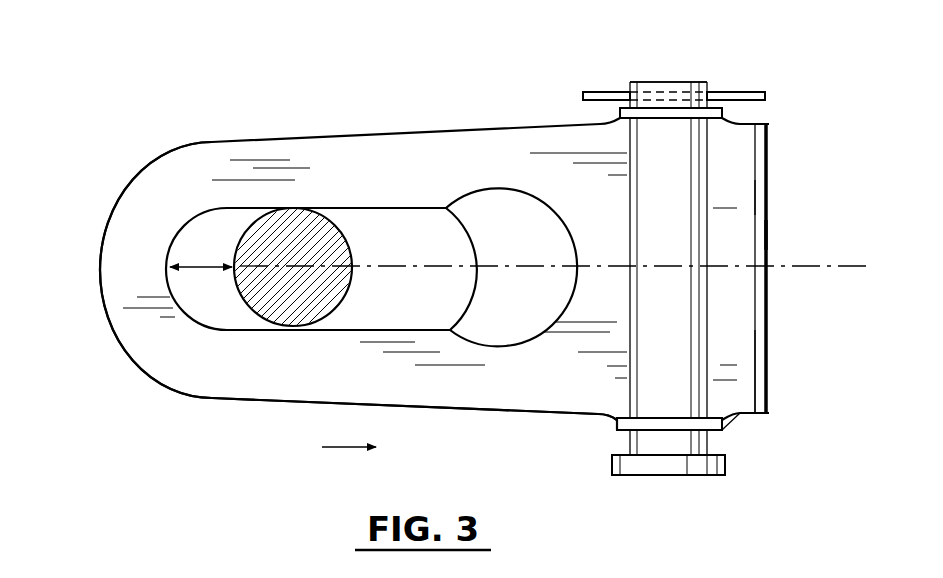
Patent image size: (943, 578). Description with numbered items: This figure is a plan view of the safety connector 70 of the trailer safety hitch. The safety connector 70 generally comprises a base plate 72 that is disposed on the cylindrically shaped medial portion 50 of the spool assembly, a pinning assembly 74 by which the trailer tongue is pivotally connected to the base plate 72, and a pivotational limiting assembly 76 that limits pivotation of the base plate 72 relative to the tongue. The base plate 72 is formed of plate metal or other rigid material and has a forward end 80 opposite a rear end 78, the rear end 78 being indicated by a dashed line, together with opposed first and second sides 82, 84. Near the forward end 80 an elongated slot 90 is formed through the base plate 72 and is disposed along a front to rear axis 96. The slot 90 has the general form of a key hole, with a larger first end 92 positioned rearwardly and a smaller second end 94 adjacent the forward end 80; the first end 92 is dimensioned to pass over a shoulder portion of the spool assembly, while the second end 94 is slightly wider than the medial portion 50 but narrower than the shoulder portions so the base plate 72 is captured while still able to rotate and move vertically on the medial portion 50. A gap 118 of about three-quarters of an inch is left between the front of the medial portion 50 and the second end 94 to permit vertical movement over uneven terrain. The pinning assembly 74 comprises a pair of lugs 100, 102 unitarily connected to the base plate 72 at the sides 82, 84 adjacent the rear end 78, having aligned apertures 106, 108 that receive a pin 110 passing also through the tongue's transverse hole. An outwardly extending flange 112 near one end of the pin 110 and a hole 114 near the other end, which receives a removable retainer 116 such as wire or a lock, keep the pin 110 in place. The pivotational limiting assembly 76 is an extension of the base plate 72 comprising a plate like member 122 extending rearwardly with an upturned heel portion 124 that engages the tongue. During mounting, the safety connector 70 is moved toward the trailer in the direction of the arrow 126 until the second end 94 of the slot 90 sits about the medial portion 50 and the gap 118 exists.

The medial portion 50 is at (347, 242).
The safety connector 70 is at (434, 260).
The base plate 72 is at (282, 402).
The pinning assembly 74 is at (611, 433).
The pivotational limiting assembly 76 is at (776, 348).
The rear end 78 is at (781, 391).
The forward end 80 is at (97, 263).
The first side 82 is at (448, 128).
The second side 84 is at (457, 408).
The elongated slot 90 is at (426, 216).
The first end 92 is at (562, 221).
The second end 94 is at (188, 313).
The front to rear axis 96 is at (789, 268).
The lug 100 is at (768, 92).
The lug 102 is at (768, 455).
The aperture 106 is at (715, 107).
The aperture 108 is at (722, 432).
The pin 110 is at (712, 174).
The outwardly extending flange 112 is at (641, 477).
The hole 114 is at (645, 90).
The removable retainer 116 is at (605, 90).
The gap 118 is at (203, 262).
The plate like member 122 is at (768, 200).
The upturned heel portion 124 is at (768, 238).
The arrow 126 is at (332, 448).